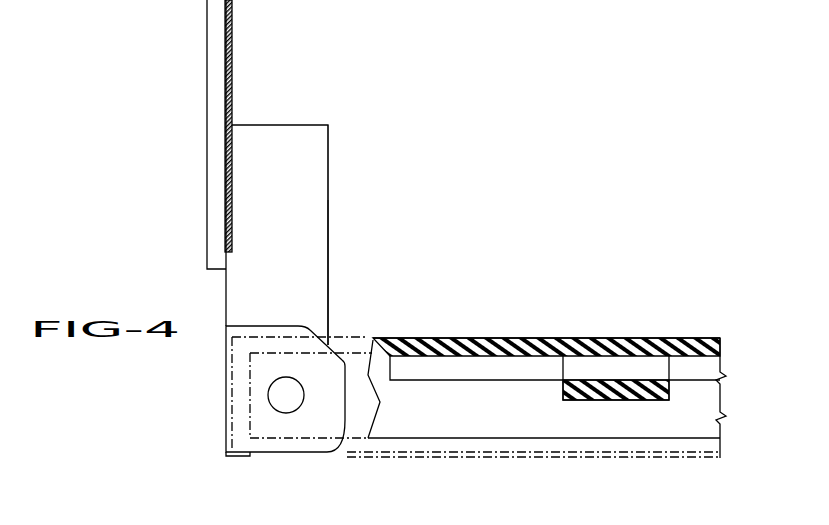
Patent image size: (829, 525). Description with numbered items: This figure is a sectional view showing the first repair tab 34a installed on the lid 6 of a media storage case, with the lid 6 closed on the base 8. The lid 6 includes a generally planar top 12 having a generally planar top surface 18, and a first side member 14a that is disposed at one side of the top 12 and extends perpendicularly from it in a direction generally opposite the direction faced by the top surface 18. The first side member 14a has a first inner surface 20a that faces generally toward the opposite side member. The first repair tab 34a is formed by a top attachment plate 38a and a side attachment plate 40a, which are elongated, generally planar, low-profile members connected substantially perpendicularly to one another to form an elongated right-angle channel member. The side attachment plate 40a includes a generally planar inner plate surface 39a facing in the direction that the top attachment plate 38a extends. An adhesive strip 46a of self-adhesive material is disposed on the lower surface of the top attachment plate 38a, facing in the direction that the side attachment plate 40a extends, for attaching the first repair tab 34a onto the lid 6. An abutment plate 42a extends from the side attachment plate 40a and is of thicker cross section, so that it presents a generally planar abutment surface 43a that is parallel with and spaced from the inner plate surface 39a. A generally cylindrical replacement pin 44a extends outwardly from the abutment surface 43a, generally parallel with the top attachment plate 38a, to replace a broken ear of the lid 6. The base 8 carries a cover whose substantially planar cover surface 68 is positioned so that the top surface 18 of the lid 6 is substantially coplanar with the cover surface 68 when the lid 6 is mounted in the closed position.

The top attachment plate 38a is at (216, 24).
The adhesive strip 46a is at (230, 73).
The side attachment plate 40a is at (329, 147).
The inner plate surface 39a is at (315, 187).
The first repair tab 34a is at (324, 236).
The cover surface 68 is at (355, 337).
The abutment surface 43a is at (315, 425).
The replacement pin 44a is at (280, 402).
The abutment plate 42a is at (347, 407).
The top surface 18 is at (515, 345).
The top 12 is at (598, 349).
The lid 6 is at (702, 336).
The first inner surface 20a is at (473, 418).
The first side member 14a is at (692, 440).
The base 8 is at (632, 462).